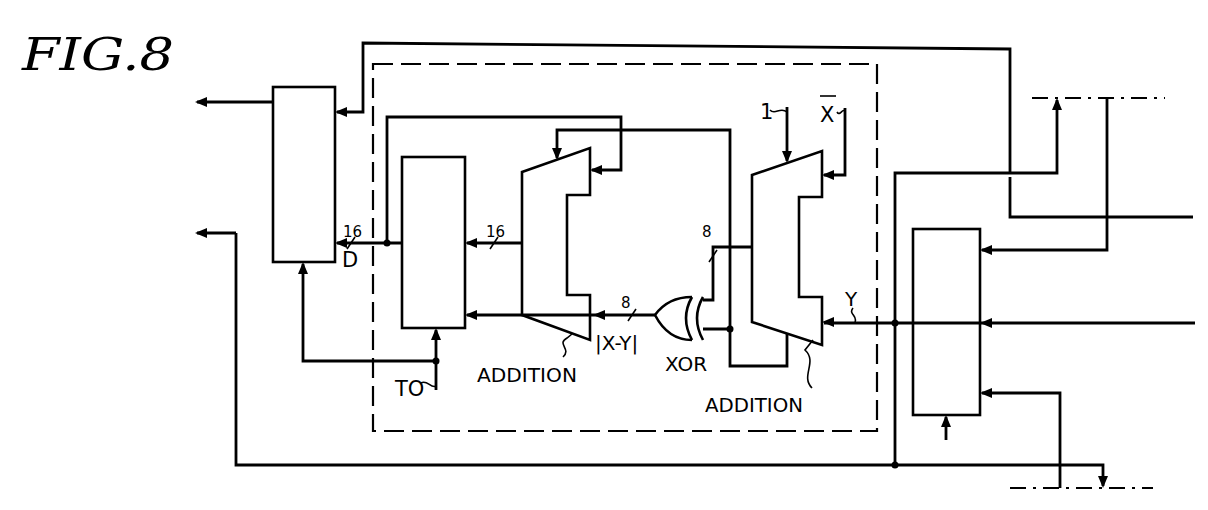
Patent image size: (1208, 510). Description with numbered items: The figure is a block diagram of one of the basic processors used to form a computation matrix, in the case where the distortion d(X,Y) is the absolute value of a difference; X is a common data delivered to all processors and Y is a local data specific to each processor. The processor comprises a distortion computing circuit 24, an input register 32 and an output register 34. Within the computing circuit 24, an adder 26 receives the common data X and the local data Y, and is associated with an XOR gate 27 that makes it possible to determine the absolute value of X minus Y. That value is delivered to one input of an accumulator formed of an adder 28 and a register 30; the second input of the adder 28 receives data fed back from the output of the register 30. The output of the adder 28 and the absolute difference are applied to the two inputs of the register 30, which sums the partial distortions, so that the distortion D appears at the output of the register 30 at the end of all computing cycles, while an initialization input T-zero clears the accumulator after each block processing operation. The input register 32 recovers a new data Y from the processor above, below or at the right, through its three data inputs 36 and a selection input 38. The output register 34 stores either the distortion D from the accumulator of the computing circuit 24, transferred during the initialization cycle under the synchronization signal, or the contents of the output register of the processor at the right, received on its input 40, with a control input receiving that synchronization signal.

The distortion computing circuit 24 is at (878, 108).
The adder 26 is at (799, 252).
The exclusive-OR gate 27 is at (690, 293).
The adder 28 is at (567, 255).
The register 30 is at (430, 157).
The input register 32 is at (962, 229).
The output register 34 is at (273, 152).
The data inputs 36 is at (1083, 253).
The selection input 38 is at (946, 438).
The input 40 is at (363, 82).